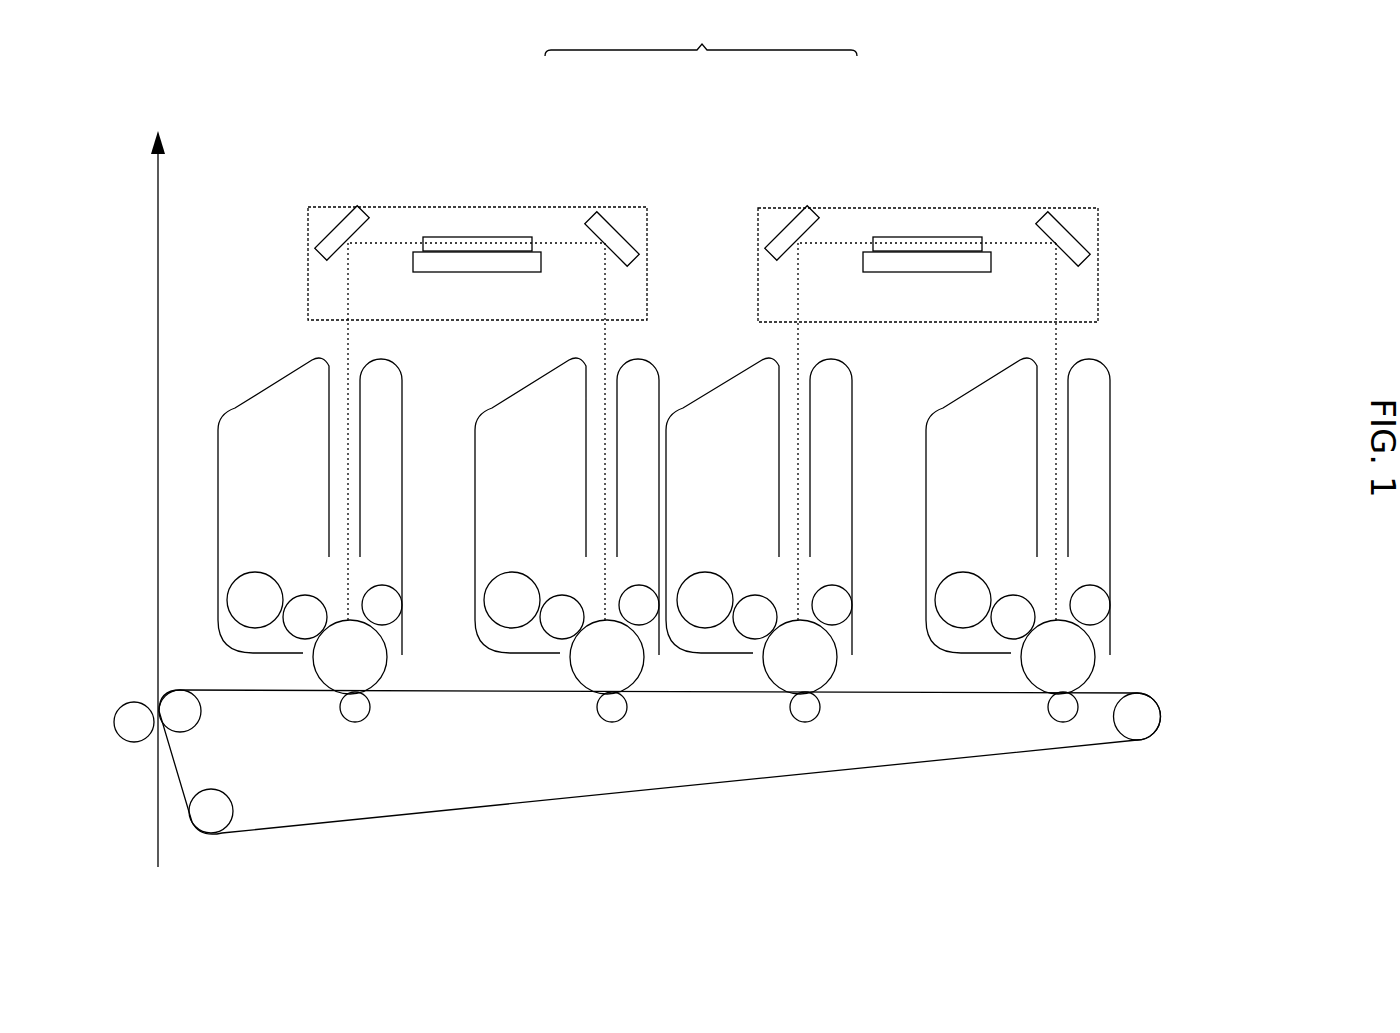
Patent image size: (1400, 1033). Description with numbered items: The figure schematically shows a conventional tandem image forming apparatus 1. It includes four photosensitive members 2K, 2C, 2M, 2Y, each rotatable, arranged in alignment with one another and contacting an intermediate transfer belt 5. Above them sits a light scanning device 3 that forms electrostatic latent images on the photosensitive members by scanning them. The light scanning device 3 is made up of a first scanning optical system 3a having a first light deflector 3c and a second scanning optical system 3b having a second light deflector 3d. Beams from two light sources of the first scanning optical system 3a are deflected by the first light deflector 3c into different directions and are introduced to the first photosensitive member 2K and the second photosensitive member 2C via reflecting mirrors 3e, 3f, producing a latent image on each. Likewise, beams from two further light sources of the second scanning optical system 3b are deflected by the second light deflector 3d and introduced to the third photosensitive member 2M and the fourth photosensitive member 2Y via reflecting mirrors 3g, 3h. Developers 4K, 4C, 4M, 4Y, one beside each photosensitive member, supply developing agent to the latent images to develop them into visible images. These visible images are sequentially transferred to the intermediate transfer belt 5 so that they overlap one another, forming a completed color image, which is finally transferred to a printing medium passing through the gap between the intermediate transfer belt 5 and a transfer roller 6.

The tandem image forming apparatus 1 is at (1226, 664).
The fourth photosensitive member 2Y is at (387, 662).
The third photosensitive member 2M is at (644, 672).
The second photosensitive member 2C is at (837, 660).
The first photosensitive member 2K is at (1095, 672).
The light scanning device 3 is at (112, 444).
The first scanning optical system 3a is at (861, 146).
The second scanning optical system 3b is at (543, 146).
The first light deflector 3c is at (928, 237).
The second light deflector 3d is at (478, 237).
The reflecting mirror 3e is at (1073, 228).
The reflecting mirror 3f is at (782, 226).
The reflecting mirror 3g is at (622, 228).
The reflecting mirror 3h is at (332, 224).
The developer 4Y is at (409, 425).
The developer 4M is at (663, 376).
The developer 4C is at (859, 428).
The developer 4K is at (1117, 428).
The intermediate transfer belt 5 is at (931, 764).
The transfer roller 6 is at (112, 722).